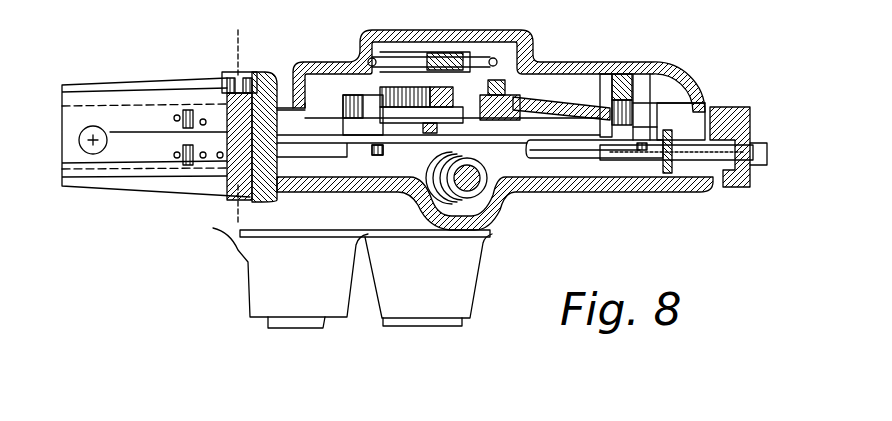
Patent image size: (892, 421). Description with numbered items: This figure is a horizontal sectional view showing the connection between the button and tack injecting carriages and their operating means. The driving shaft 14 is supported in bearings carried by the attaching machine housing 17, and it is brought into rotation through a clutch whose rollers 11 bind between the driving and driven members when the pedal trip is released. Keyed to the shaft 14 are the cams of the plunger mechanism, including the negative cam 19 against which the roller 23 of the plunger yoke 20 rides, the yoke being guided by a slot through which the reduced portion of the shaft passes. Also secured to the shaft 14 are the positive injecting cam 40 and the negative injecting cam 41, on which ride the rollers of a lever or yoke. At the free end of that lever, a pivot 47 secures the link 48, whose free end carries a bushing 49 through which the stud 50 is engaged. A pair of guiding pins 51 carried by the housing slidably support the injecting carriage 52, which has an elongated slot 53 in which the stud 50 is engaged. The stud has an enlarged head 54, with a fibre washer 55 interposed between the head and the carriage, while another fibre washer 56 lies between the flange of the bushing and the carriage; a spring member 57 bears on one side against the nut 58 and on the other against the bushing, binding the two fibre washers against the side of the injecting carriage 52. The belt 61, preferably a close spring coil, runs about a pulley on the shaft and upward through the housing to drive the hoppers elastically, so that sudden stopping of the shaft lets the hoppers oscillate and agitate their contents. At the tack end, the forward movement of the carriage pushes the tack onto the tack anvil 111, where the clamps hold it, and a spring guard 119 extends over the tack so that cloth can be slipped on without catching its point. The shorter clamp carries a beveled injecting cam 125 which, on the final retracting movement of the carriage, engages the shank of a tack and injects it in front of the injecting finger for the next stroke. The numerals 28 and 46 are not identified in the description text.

The rollers 11 is at (375, 406).
The shaft 14 is at (430, 326).
The attaching machine housing 17 is at (397, 33).
The negative cam 19 is at (383, 157).
The plunger yoke 20 is at (485, 258).
The roller 23 is at (250, 52).
The base plate 28 is at (427, 233).
The positive injecting cam 40 is at (318, 110).
The negative injecting cam 41 is at (410, 87).
The slide block 46 is at (460, 113).
The pivot 47 is at (513, 92).
The link 48 is at (553, 130).
The bushing 49 is at (647, 110).
The stud 50 is at (632, 107).
The guiding pins 51 is at (588, 157).
The injecting carriage 52 is at (517, 137).
The elongated slot 53 is at (600, 72).
The enlarged head 54 is at (640, 157).
The fibre washer 55 is at (690, 117).
The fibre washer 56 is at (667, 123).
The spring member 57 is at (663, 67).
The nut 58 is at (643, 57).
The belt 61 is at (500, 55).
The tack anvil 111 is at (90, 152).
The spring guard 119 is at (133, 118).
The beveled injecting cam 125 is at (207, 123).